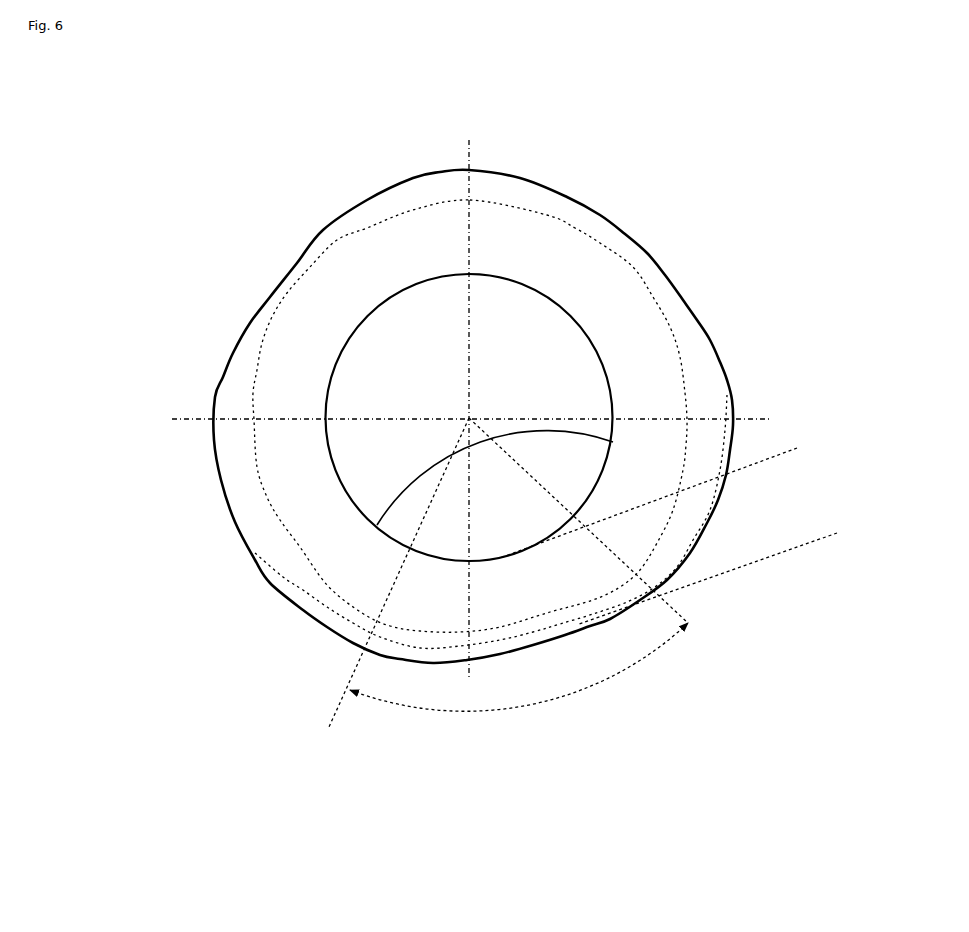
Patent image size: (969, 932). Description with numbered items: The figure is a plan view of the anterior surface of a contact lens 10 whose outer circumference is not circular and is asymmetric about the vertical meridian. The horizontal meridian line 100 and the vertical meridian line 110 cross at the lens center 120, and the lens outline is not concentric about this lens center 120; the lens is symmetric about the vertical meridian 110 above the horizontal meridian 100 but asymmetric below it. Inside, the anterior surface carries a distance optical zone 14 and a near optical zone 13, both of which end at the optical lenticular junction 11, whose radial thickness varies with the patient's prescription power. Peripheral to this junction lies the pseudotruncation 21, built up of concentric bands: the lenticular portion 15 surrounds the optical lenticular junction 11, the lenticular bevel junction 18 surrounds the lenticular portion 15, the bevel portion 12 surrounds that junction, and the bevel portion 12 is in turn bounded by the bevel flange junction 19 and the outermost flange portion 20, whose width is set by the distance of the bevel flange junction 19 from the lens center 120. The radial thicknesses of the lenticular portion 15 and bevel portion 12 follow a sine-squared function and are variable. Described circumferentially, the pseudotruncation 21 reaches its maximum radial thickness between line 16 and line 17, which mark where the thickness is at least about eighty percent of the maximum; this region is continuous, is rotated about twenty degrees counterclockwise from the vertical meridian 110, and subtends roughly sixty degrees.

The lens 10 is at (649, 251).
The optical lenticular junction 11 is at (328, 367).
The bevel portion 12 is at (268, 545).
The near optical zone 13 is at (520, 509).
The distance optical zone 14 is at (548, 370).
The lenticular portion 15 is at (322, 322).
The line 16 is at (390, 587).
The line 17 is at (690, 625).
The lenticular bevel junction 18 is at (263, 497).
The bevel flange junction 19 is at (326, 627).
The flange portion 20 is at (579, 627).
The pseudotruncation 21 is at (773, 462).
The horizontal meridian line 100 is at (489, 420).
The vertical meridian line 110 is at (469, 399).
The lens center 120 is at (462, 417).